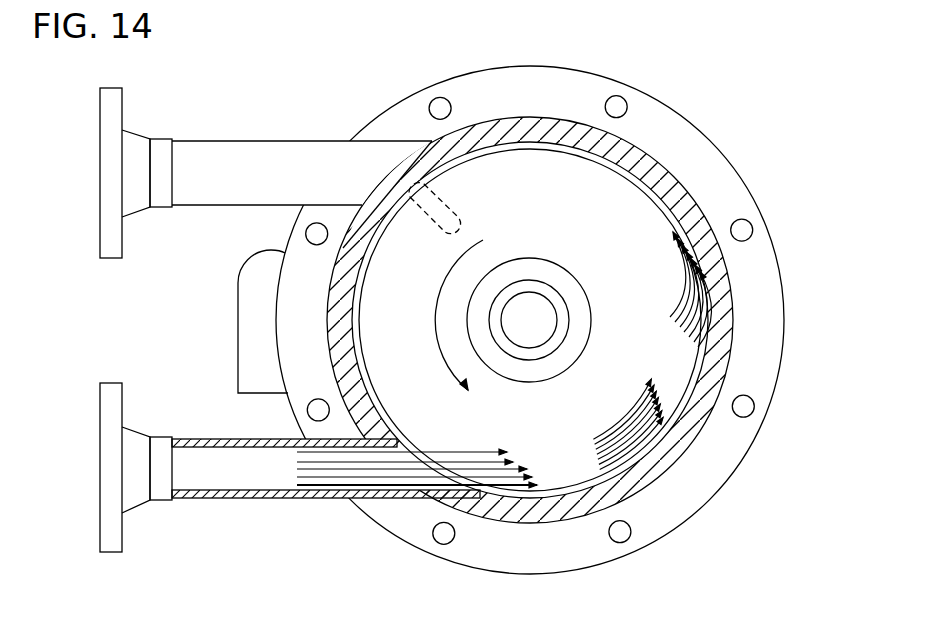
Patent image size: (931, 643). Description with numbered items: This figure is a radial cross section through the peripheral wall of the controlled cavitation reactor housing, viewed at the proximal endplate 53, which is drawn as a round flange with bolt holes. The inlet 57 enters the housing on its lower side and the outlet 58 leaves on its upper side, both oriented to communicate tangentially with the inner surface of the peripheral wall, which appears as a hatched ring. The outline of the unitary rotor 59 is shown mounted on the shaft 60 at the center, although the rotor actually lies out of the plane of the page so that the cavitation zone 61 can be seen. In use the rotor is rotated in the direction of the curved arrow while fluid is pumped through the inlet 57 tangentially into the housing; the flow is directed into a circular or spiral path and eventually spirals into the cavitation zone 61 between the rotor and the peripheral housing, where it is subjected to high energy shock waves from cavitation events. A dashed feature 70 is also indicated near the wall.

The proximal endplate 53 is at (707, 183).
The inlet 57 is at (228, 502).
The outlet 58 is at (225, 157).
The unitary rotor 59 is at (592, 197).
The shaft 60 is at (528, 317).
The cavitation zone 61 is at (702, 318).
The opening 70 is at (455, 220).